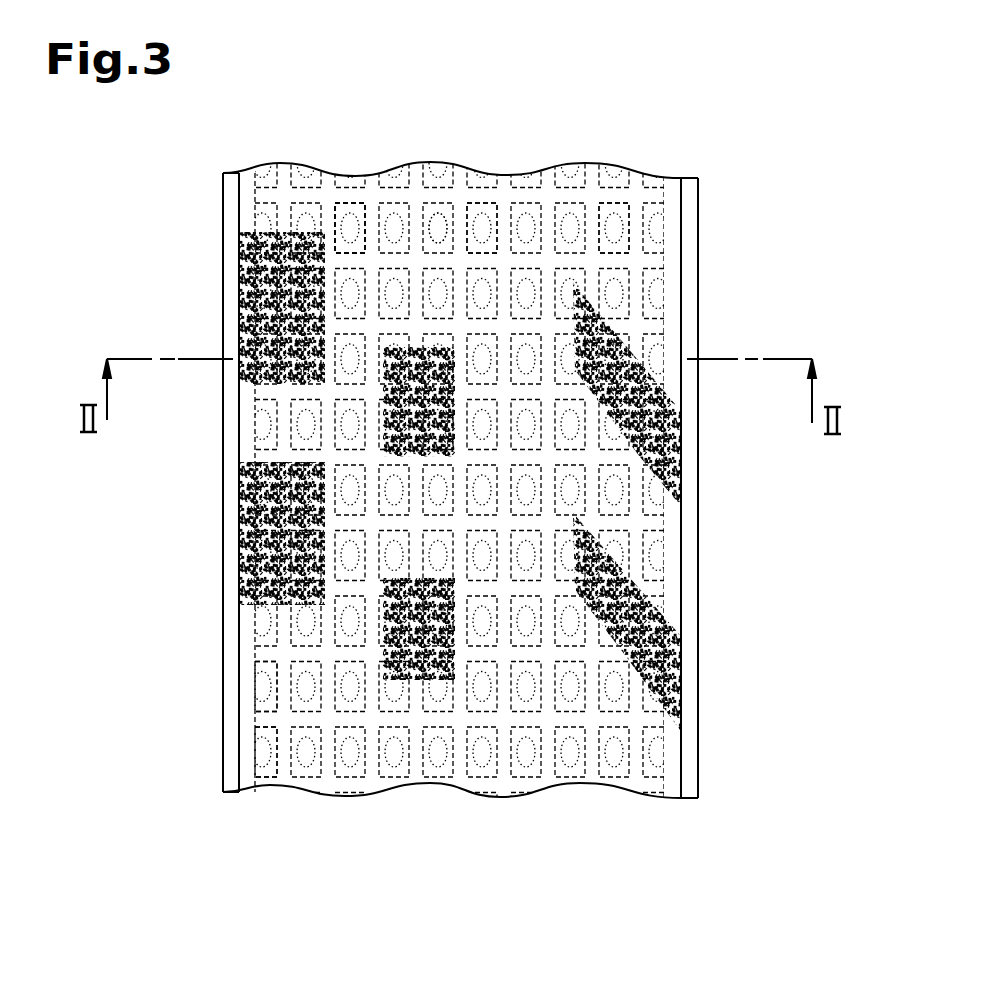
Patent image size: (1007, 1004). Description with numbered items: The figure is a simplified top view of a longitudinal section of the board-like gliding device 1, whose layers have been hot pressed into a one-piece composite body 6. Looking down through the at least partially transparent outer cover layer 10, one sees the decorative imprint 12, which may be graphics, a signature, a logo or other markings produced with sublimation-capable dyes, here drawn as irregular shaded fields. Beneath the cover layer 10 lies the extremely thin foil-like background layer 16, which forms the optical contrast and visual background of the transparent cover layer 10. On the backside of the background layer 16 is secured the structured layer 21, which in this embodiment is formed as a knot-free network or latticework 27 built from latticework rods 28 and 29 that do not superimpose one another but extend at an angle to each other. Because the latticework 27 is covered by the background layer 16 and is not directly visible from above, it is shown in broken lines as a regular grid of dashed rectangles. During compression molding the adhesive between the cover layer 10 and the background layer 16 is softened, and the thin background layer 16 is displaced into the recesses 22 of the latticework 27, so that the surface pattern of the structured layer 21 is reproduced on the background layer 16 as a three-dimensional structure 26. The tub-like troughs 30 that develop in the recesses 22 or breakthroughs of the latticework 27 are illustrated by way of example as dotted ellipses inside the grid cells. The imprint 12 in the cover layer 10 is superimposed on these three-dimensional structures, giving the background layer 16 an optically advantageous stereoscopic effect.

The gliding device 1 is at (745, 98).
The composite body 6 is at (700, 297).
The cover layer 10 is at (504, 742).
The imprint 12 is at (232, 552).
The background layer 16 is at (591, 201).
The structured layer 21 is at (552, 165).
The recesses 22 is at (362, 206).
The three-dimensional structure 26 is at (440, 195).
The latticework 27 is at (468, 190).
The latticework rods 28 is at (262, 653).
The latticework rods 29 is at (281, 763).
The tub-like troughs 30 is at (336, 215).